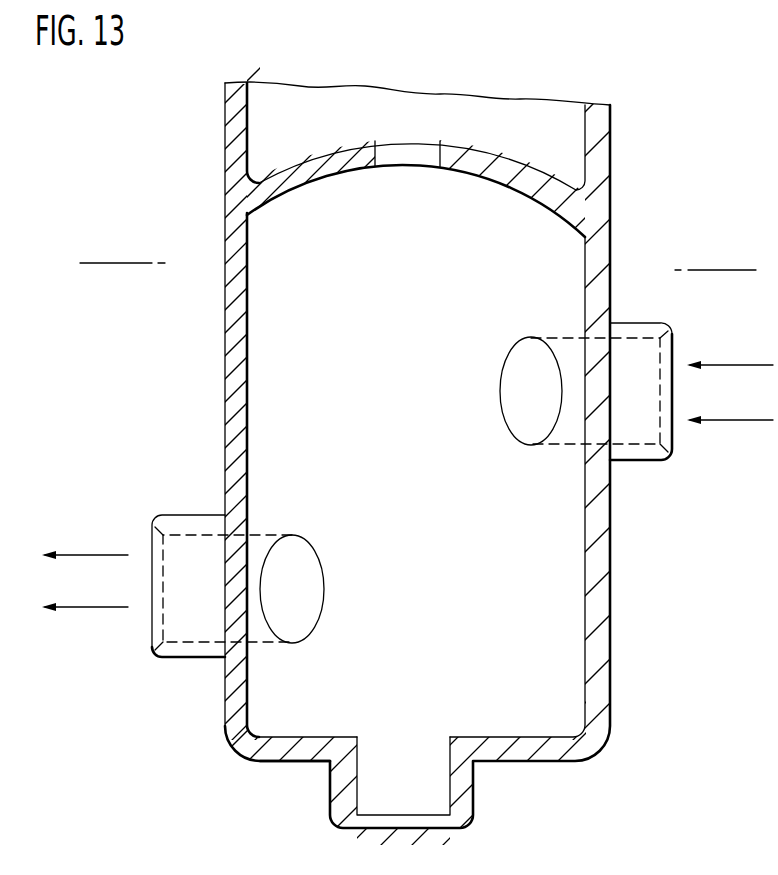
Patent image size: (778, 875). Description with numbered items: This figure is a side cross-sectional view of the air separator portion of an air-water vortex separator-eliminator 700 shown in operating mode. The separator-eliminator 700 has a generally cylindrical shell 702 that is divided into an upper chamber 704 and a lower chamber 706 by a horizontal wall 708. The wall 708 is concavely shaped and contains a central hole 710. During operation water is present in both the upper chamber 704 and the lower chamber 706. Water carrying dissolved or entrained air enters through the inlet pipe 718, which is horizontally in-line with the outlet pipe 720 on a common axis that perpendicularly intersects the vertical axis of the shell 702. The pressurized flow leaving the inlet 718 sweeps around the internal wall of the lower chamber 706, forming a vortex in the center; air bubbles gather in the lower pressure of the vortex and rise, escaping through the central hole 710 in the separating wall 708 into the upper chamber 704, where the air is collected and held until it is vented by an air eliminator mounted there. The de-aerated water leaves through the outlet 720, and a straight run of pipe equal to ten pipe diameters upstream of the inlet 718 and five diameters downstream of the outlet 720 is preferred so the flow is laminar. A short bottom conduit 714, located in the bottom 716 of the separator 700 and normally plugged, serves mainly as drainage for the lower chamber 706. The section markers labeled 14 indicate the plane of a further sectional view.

The air-water vortex separator-eliminator 700 is at (607, 754).
The cylindrical shell 702 is at (206, 133).
The upper chamber 704 is at (565, 137).
The lower chamber 706 is at (566, 560).
The wall 708 is at (323, 160).
The central hole 710 is at (423, 131).
The bottom conduit 714 is at (475, 792).
The bottom 716 is at (272, 766).
The inlet pipe 718 is at (655, 324).
The outlet pipe 720 is at (171, 660).
The section line 14- 14 is at (738, 265).